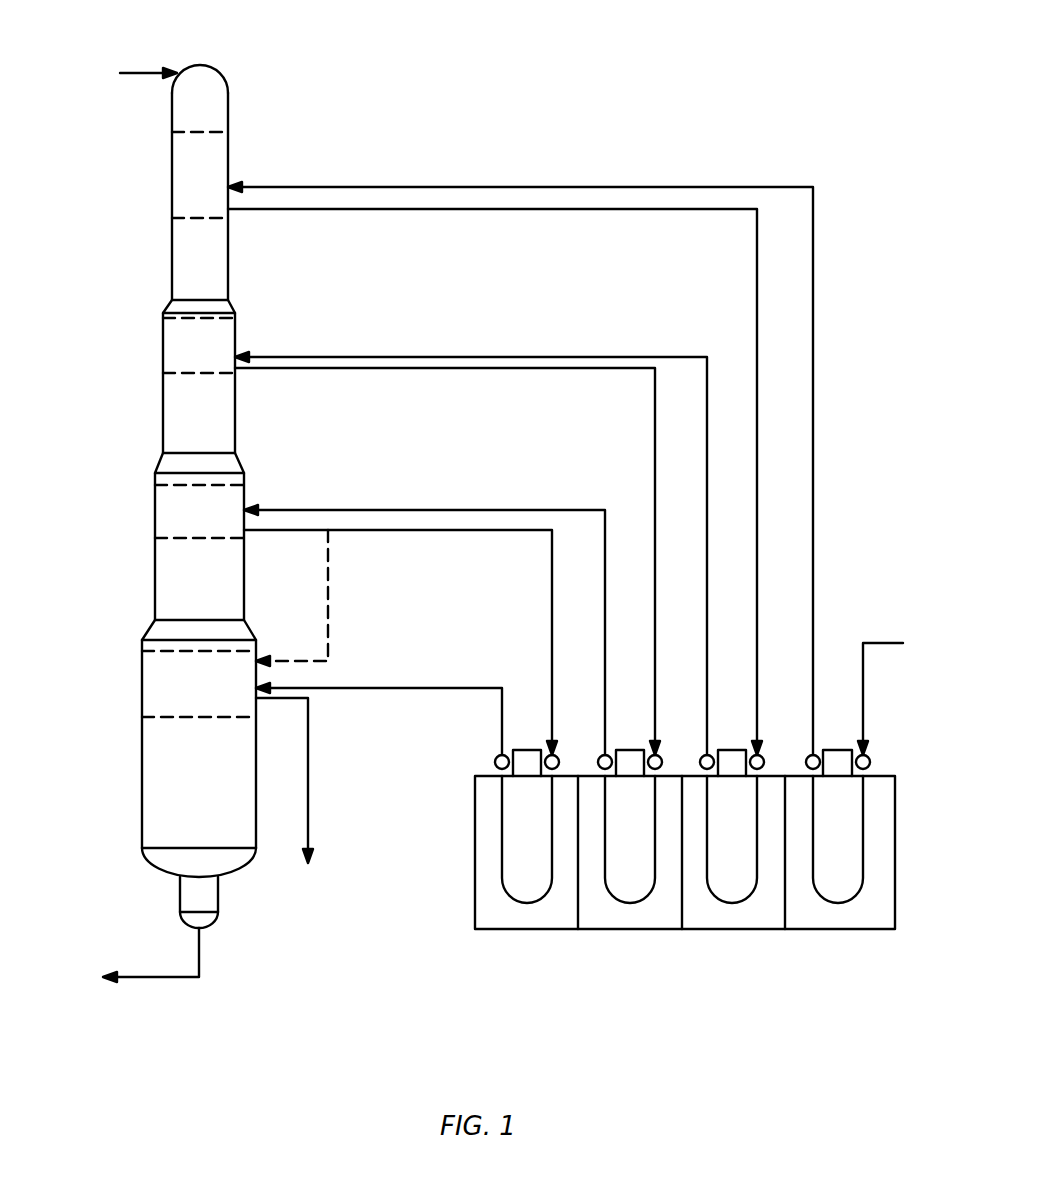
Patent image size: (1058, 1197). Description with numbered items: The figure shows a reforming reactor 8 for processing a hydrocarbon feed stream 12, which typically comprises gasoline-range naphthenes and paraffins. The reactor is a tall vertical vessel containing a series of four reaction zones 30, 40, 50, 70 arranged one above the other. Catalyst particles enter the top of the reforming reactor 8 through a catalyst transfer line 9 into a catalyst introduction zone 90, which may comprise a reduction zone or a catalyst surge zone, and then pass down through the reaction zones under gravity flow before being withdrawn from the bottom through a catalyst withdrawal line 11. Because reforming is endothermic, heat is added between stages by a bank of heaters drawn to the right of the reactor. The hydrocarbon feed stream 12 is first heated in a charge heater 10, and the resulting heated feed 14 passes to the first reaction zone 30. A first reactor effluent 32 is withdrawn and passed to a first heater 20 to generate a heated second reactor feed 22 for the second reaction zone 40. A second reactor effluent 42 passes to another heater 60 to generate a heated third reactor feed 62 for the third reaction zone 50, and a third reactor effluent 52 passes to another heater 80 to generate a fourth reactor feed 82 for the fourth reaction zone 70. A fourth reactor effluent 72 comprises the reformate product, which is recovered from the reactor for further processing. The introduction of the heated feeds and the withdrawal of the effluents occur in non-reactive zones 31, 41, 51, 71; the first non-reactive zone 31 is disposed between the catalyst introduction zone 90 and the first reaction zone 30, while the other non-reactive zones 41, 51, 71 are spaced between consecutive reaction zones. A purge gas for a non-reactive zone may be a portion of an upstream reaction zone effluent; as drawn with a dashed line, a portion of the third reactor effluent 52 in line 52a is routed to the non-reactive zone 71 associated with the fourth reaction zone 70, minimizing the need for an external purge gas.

The reforming reactor 8 is at (92, 118).
The catalyst transfer line 9 is at (144, 65).
The catalyst introduction zone 90 is at (217, 95).
The first non-reactive zone 31 is at (171, 167).
The first reaction zone 30 is at (171, 229).
The second non-reactive zone 41 is at (163, 334).
The second reaction zone 40 is at (163, 382).
The third non-reactive zone 51 is at (155, 502).
The third reaction zone 50 is at (155, 544).
The fourth non-reactive zone 71 is at (142, 687).
The fourth reaction zone 70 is at (142, 741).
The catalyst withdrawal line 11 is at (156, 985).
The first reactor effluent 32 is at (648, 210).
The heated feed 14 is at (813, 397).
The heated second reactor feed 22 is at (535, 352).
The second reactor effluent 42 is at (595, 372).
The heated third reactor feed 62 is at (303, 505).
The third reactor effluent 52 is at (515, 535).
The purge gas line 52a is at (330, 610).
The fourth reactor feed 82 is at (385, 695).
The fourth reactor effluent 72 is at (308, 780).
The hydrocarbon feed stream 12 is at (883, 640).
The charge heater 10 is at (895, 851).
The heater 80 is at (475, 851).
The heater 60 is at (663, 930).
The first heater 20 is at (772, 930).